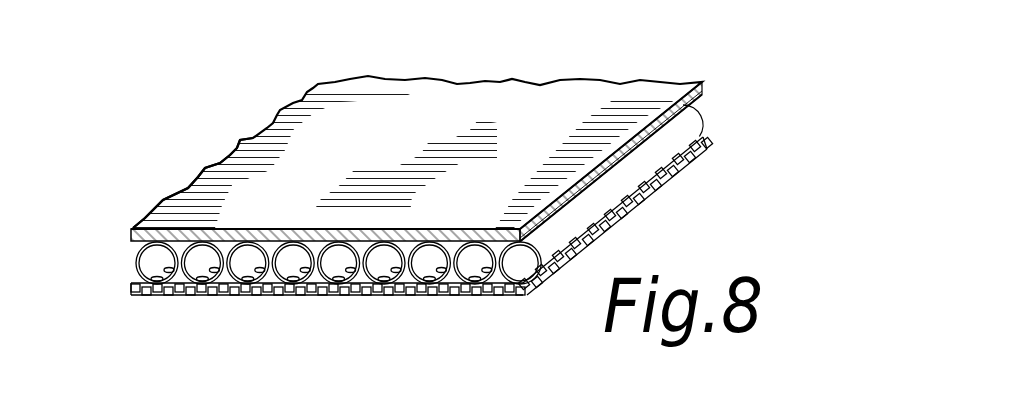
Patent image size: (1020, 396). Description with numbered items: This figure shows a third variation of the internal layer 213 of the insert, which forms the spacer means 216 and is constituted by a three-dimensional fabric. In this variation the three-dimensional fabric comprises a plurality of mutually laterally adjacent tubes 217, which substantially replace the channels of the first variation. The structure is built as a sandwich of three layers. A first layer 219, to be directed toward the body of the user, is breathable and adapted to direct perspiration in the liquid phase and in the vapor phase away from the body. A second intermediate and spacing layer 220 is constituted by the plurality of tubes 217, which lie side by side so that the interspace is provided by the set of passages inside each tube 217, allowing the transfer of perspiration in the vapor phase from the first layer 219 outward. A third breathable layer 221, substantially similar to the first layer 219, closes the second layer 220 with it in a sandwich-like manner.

The internal layer 213 is at (232, 151).
The spacer means 216 is at (506, 60).
The tubes 217 is at (317, 287).
The first layer 219 is at (703, 83).
The second intermediate and spacing layer 220 is at (643, 155).
The third breathable layer 221 is at (623, 212).